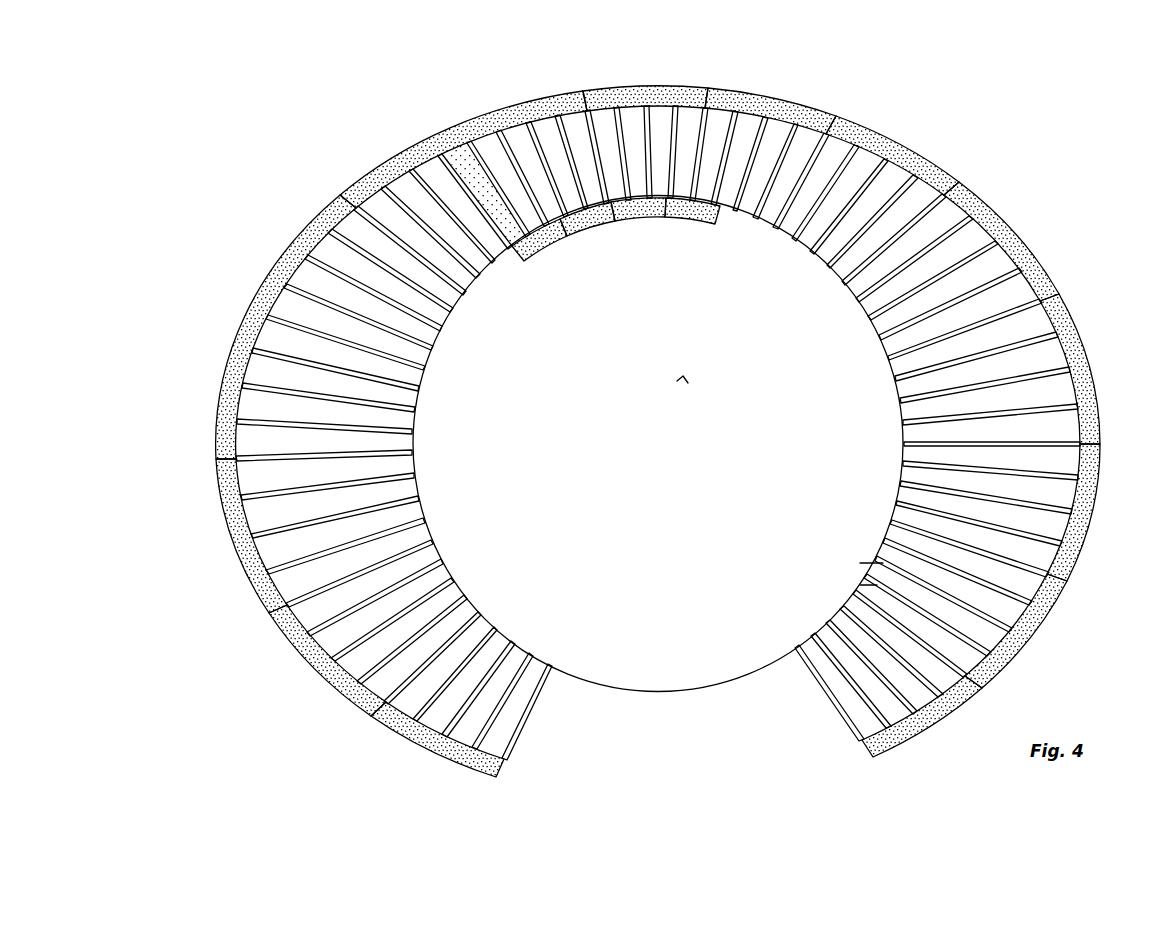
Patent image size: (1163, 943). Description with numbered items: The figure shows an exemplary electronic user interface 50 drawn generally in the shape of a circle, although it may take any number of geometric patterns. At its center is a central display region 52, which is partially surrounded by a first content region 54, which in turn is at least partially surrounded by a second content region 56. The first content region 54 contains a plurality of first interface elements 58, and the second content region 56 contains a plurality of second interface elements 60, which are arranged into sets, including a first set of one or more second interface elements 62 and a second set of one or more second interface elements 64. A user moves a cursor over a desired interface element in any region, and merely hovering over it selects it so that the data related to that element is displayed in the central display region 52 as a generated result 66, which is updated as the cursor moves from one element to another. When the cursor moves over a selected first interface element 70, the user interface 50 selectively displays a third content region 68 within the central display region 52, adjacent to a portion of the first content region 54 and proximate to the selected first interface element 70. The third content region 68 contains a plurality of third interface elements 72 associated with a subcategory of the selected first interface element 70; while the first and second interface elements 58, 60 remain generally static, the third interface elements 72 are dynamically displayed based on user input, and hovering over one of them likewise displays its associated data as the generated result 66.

The user interface 50 is at (999, 88).
The central display region 52 is at (668, 570).
The first content region 54 is at (830, 688).
The second content region 56 is at (867, 750).
The first interface elements 58 is at (860, 585).
The second interface elements 60 is at (1067, 553).
The first set of second interface elements 62 is at (335, 188).
The second set of second interface elements 64 is at (1108, 444).
The generated result 66 is at (685, 388).
The third content region 68 is at (688, 220).
The selected first interface element 70 is at (464, 156).
The third interface elements 72 is at (637, 214).